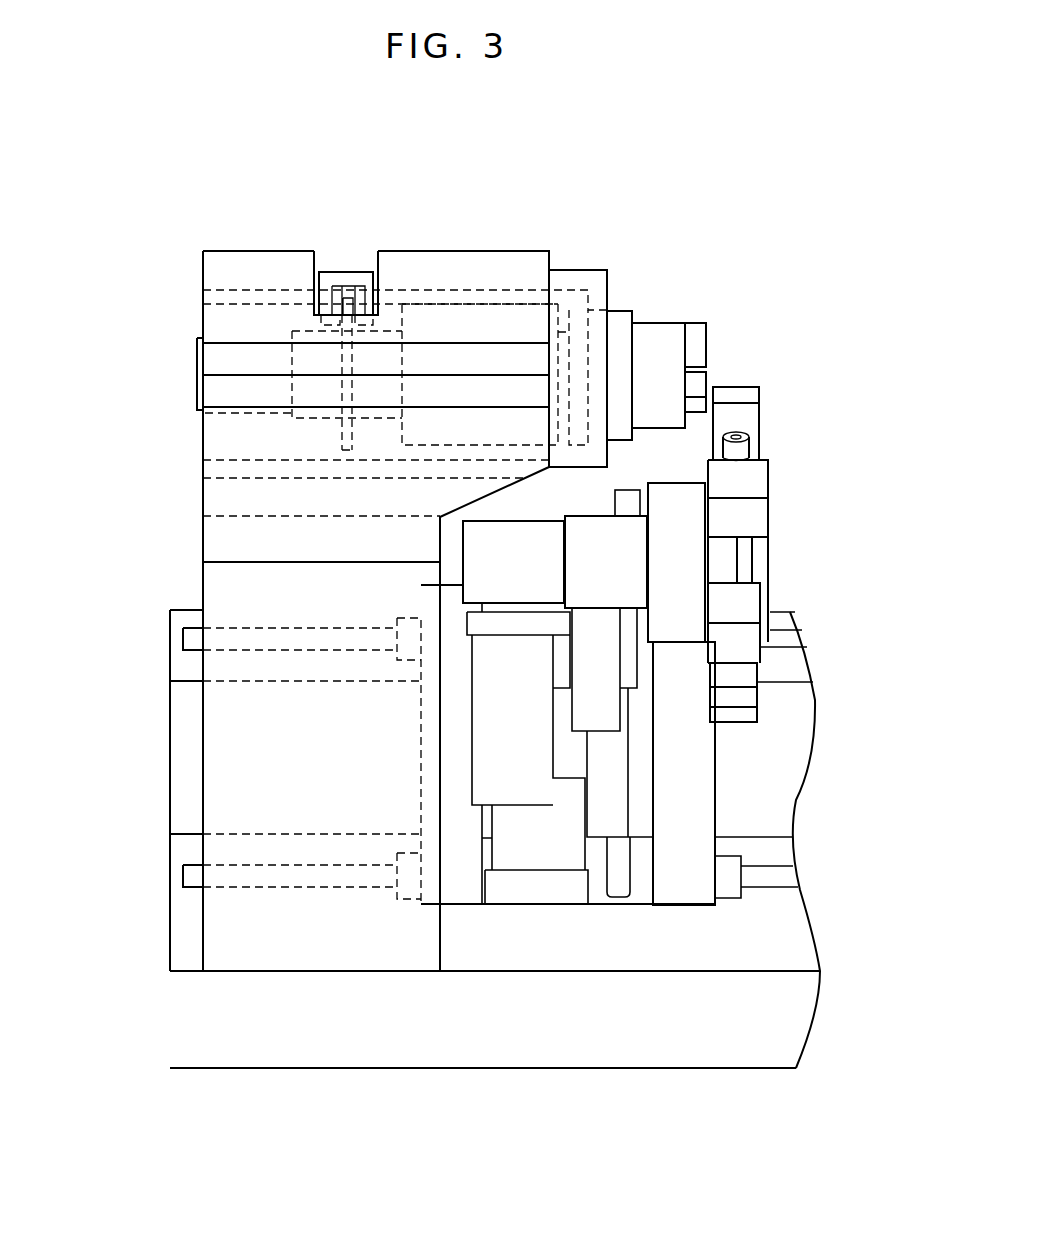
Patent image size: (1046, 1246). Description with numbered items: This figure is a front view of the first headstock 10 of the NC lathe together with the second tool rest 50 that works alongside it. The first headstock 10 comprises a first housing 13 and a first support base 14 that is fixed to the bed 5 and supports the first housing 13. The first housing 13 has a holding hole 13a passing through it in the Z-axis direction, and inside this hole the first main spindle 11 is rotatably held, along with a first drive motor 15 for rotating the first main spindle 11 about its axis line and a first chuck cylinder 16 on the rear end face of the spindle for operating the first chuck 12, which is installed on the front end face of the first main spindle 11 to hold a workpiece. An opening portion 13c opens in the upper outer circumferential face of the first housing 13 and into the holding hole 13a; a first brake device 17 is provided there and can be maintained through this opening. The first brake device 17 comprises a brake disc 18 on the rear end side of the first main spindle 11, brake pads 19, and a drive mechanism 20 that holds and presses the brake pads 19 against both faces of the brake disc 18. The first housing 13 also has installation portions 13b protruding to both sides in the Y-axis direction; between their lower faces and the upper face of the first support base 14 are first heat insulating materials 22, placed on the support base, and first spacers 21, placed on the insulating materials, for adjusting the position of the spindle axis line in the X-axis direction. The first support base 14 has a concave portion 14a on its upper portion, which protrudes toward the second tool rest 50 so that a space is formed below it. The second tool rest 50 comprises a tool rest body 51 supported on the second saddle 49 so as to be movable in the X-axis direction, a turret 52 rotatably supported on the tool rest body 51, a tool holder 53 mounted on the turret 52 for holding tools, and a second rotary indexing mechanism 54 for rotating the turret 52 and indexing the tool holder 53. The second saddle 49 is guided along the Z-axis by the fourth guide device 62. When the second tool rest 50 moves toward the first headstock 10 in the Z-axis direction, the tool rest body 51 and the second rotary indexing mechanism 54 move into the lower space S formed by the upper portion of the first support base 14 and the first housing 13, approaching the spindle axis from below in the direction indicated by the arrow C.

The first headstock 10 is at (168, 252).
The first housing 13 is at (233, 258).
The holding hole 13a is at (462, 298).
The installation portions 13b is at (212, 358).
The opening portion 13c is at (320, 300).
The first support base 14 is at (212, 598).
The concave portion 14a is at (232, 498).
The first drive motor 15 is at (490, 310).
The first chuck cylinder 16 is at (228, 333).
The first brake device 17 is at (348, 233).
The brake disc 18 is at (347, 340).
The brake pads 19 is at (334, 297).
The drive mechanism 20 is at (346, 278).
The first spacers 21 is at (212, 388).
The first heat insulating materials 22 is at (212, 410).
The first main spindle 11 is at (615, 318).
The first chuck 12 is at (668, 330).
The lower space S is at (522, 500).
The direction C is at (798, 375).
The tool holder 53 is at (736, 392).
The second rotary indexing mechanism 54 is at (553, 511).
The second tool rest 50 is at (805, 574).
The tool rest body 51 is at (693, 575).
The turret 52 is at (765, 560).
The second saddle 49 is at (707, 795).
The fourth guide device 62 is at (765, 850).
The bed 5 is at (407, 1058).